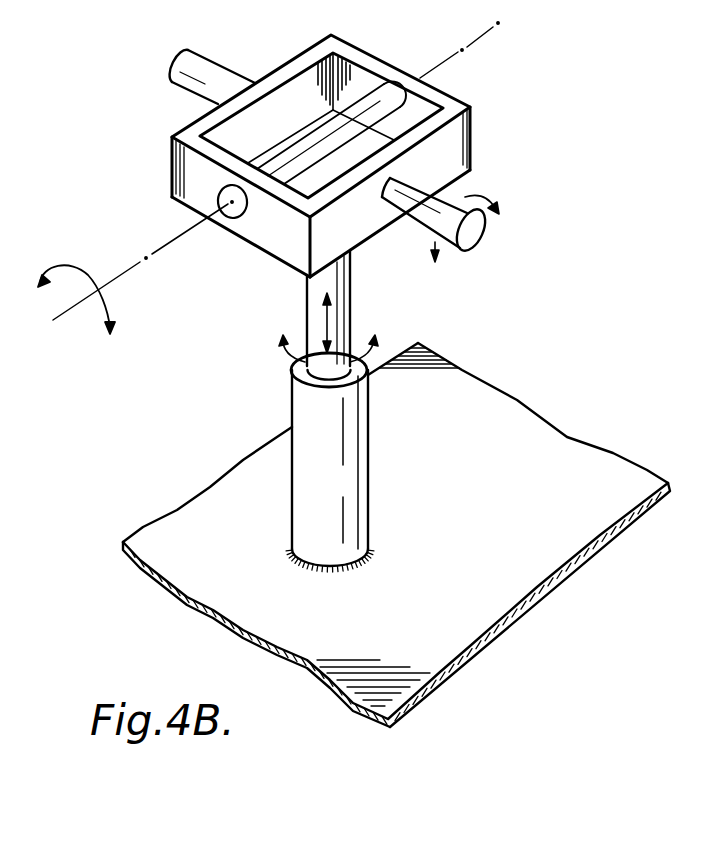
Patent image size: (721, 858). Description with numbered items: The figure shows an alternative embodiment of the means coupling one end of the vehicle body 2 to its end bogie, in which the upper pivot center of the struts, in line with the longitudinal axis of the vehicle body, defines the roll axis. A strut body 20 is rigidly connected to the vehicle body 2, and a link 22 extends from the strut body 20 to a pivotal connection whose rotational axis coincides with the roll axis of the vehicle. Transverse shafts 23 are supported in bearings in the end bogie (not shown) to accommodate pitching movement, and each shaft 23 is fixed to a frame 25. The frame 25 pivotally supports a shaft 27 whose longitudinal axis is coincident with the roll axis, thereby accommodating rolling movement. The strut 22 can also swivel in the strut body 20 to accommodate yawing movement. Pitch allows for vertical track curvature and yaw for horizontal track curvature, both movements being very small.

The vehicle body 2 is at (494, 567).
The strut body 20 is at (337, 473).
The link 22 is at (340, 302).
The transverse shaft 23 is at (200, 80).
The frame 25 is at (403, 70).
The shaft 27 is at (275, 170).